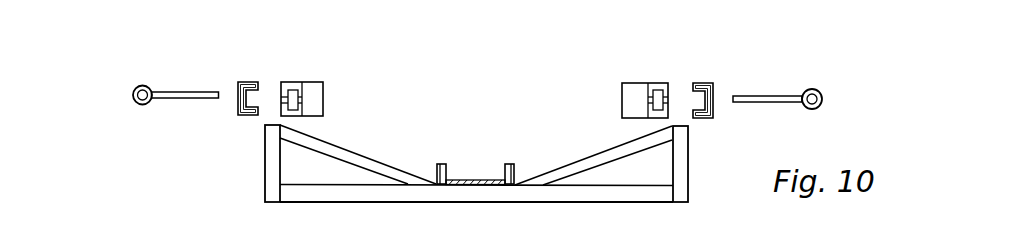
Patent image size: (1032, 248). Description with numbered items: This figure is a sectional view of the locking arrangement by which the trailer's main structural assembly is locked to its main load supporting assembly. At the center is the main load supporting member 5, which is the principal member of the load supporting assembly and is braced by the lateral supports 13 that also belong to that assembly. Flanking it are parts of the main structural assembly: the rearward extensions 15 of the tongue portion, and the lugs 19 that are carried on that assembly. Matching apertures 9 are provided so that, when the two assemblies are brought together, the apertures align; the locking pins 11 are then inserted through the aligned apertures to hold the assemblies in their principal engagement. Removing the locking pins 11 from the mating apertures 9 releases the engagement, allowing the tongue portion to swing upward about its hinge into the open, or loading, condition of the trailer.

The main load supporting member 5 is at (475, 179).
The matching apertures 9 is at (477, 163).
The locking pins 11 is at (177, 91).
The lateral supports 13 is at (358, 193).
The rearward extensions 15 is at (240, 83).
The lugs 19 is at (292, 82).